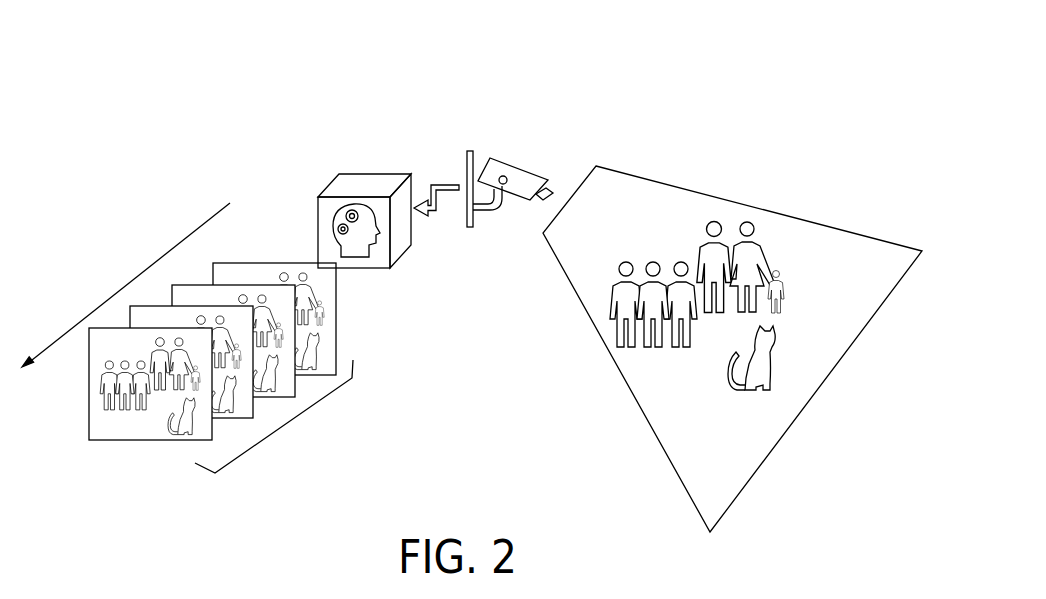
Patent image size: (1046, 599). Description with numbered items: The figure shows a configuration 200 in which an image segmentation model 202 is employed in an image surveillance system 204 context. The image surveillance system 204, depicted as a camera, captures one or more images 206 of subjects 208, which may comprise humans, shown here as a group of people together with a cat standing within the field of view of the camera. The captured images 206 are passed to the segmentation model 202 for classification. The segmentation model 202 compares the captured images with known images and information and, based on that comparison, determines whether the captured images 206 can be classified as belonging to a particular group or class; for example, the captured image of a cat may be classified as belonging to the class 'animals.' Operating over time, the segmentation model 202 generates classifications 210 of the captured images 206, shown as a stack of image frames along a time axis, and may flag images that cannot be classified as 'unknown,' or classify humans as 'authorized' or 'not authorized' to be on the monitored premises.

The configuration 200 is at (667, 95).
The image segmentation model 202 is at (406, 259).
The image surveillance system 204 is at (516, 163).
The captured images 206 is at (748, 483).
The subjects 208 is at (655, 250).
The classifications 210 is at (280, 428).